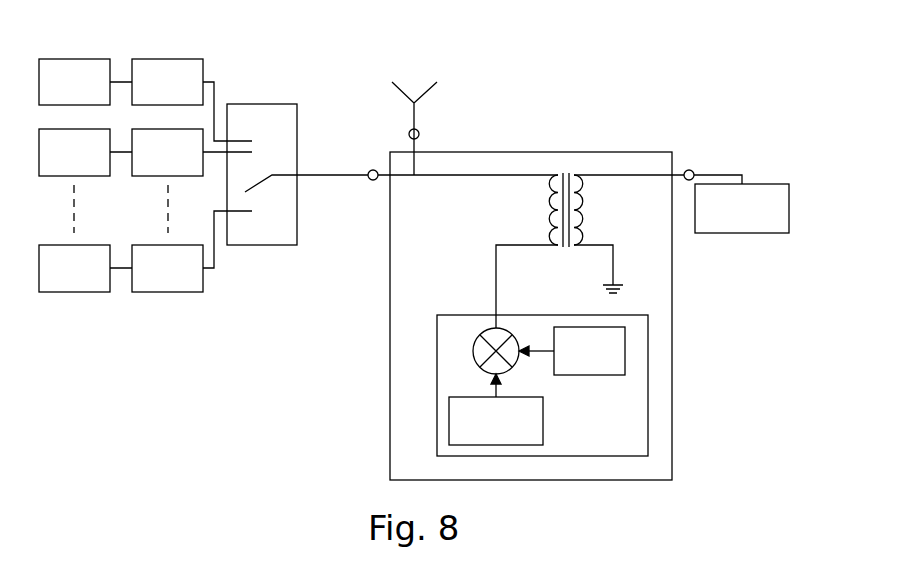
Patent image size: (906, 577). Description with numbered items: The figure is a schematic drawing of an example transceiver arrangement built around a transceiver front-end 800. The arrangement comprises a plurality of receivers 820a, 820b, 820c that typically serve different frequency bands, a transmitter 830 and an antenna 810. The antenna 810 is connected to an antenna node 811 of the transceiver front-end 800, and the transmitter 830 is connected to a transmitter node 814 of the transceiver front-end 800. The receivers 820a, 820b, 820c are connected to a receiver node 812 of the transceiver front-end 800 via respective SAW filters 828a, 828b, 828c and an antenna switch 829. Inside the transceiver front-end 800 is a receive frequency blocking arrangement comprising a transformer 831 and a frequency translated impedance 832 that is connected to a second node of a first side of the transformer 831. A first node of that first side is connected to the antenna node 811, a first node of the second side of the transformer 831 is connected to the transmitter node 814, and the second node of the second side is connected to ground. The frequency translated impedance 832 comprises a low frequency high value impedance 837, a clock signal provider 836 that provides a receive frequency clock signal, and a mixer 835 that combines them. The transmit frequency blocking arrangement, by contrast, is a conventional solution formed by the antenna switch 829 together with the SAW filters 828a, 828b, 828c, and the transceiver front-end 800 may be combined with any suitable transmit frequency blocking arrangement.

The transceiver front-end 800 is at (600, 152).
The antenna 810 is at (401, 91).
The antenna node 811 is at (420, 135).
The receiver node 812 is at (372, 182).
The transmitter node 814 is at (695, 172).
The receiver 820a is at (74, 82).
The receiver 820b is at (74, 152).
The receiver 820c is at (74, 268).
The SAW filter 828a is at (167, 82).
The SAW filter 828b is at (167, 152).
The SAW filter 828c is at (167, 268).
The antenna switch 829 is at (262, 174).
The transmitter 830 is at (742, 208).
The transformer 831 is at (555, 210).
The frequency translated impedance 832 is at (542, 385).
The mixer 835 is at (511, 366).
The clock signal provider 836 is at (572, 351).
The low frequency high value impedance 837 is at (496, 409).